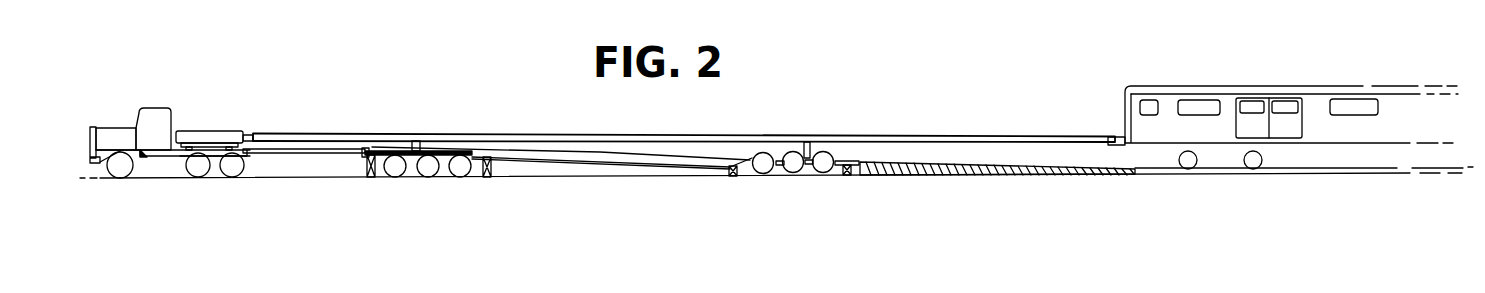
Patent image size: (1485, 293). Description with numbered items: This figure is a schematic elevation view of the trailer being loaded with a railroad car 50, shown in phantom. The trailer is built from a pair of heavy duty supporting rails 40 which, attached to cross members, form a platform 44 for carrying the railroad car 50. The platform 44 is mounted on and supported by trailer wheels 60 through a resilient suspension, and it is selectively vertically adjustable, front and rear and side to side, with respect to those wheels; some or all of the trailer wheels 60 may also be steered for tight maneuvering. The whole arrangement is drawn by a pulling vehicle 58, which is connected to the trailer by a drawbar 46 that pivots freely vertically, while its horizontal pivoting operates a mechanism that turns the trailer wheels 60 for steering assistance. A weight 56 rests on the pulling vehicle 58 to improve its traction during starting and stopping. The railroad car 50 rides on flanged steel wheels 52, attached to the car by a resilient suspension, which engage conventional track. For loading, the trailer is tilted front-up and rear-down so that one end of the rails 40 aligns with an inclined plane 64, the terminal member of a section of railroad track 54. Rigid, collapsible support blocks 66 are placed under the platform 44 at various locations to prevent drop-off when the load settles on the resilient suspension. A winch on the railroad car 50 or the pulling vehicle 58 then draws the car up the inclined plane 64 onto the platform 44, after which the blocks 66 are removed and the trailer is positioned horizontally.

The supporting rails 40 is at (430, 148).
The platform 44 is at (596, 157).
The drawbar 46 is at (286, 160).
The railroad car 50 is at (1240, 87).
The steel wheels 52 is at (1192, 168).
The railroad track 54 is at (1340, 170).
The weight 56 is at (210, 130).
The pulling vehicle 58 is at (158, 108).
The trailer wheels 60 is at (457, 160).
The inclined plane 64 is at (1006, 166).
The support blocks 66 is at (372, 170).